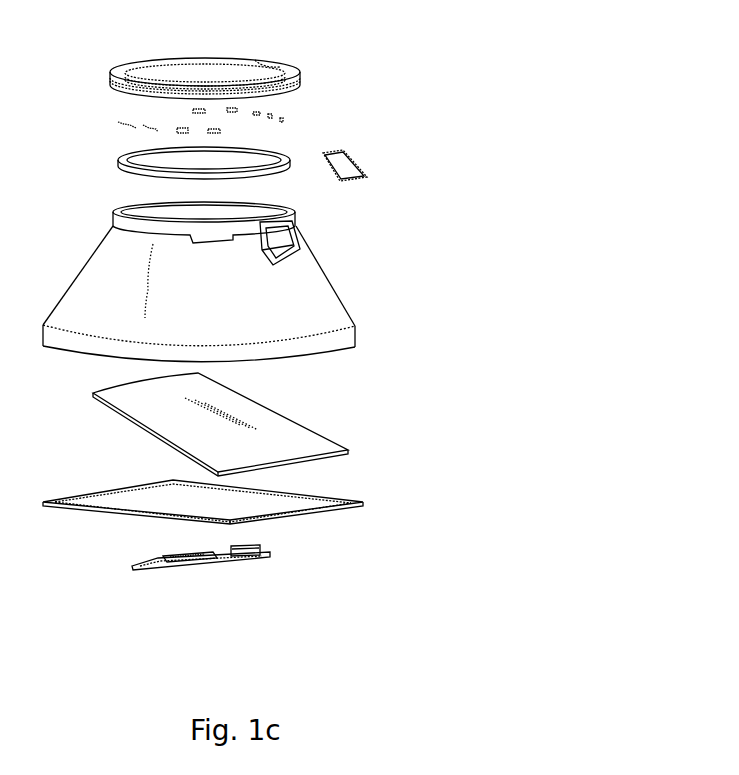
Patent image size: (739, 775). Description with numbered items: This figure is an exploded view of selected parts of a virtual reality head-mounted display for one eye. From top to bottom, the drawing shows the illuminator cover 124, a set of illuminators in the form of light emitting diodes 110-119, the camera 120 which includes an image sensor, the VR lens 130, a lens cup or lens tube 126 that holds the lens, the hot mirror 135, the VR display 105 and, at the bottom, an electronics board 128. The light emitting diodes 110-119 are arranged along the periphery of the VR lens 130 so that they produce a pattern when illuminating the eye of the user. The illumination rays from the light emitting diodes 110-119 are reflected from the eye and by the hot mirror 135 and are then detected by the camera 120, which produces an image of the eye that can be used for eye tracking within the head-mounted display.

The illuminator cover 124 is at (253, 65).
The illuminators in the form of light emitting diodes 110-119 is at (270, 113).
The camera 120 is at (348, 170).
The VR lens 130 is at (290, 178).
The lens cup or lens tube 126 is at (337, 308).
The hot mirror 135 is at (303, 437).
The VR display 105 is at (342, 510).
The electronics board 128 is at (237, 565).